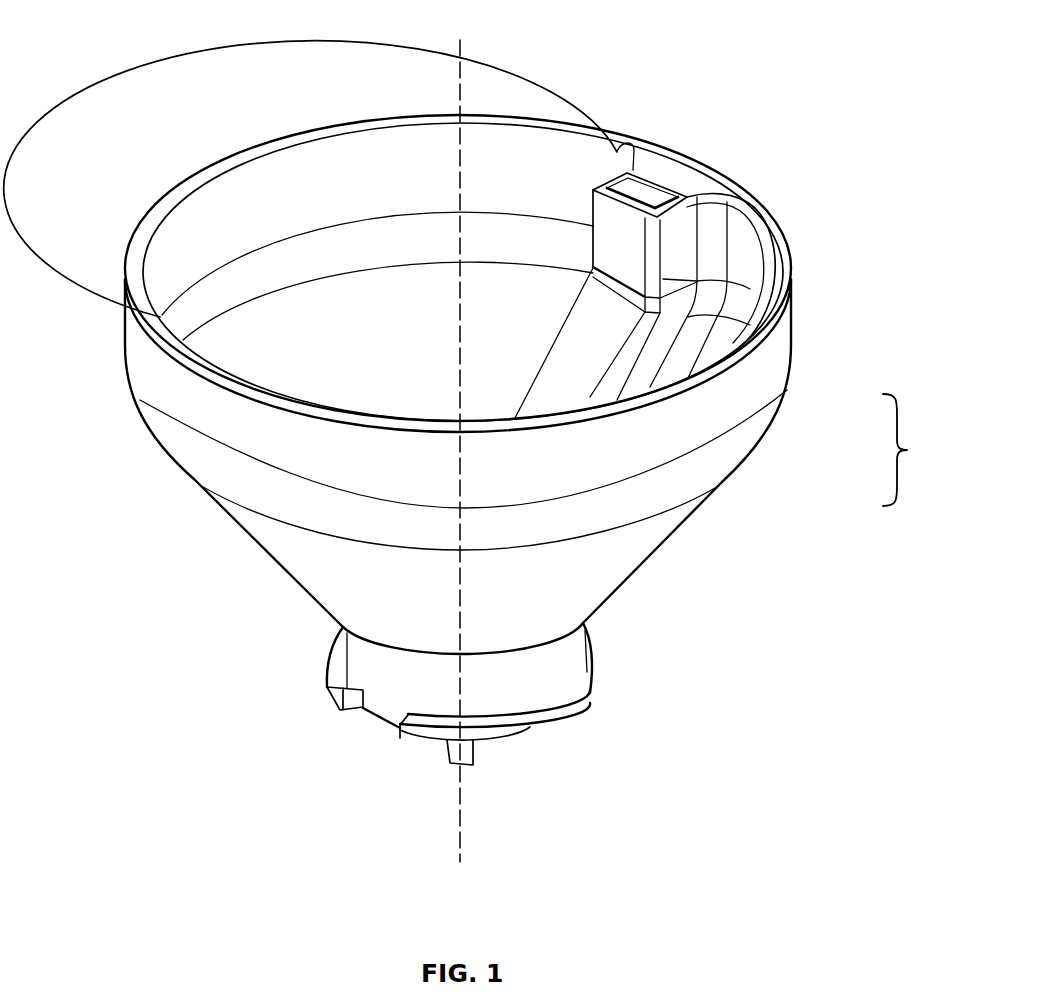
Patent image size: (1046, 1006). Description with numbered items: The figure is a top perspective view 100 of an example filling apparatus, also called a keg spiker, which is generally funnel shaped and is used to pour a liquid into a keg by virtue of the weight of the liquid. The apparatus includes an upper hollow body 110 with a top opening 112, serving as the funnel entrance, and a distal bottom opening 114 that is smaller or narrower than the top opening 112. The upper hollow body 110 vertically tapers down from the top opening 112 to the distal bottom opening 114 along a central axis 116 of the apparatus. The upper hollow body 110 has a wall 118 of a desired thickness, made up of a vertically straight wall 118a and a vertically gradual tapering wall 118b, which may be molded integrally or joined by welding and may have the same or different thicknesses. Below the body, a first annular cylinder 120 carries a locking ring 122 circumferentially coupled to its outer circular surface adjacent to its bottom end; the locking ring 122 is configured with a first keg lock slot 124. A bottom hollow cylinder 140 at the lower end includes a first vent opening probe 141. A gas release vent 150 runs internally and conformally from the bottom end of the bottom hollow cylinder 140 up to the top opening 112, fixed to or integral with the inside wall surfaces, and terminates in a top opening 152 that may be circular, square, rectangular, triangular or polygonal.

The top perspective view 100 is at (142, 48).
The upper hollow body 110 is at (171, 381).
The top opening 112 is at (188, 240).
The distal bottom opening 114 is at (427, 663).
The central axis 116 is at (468, 53).
The wall 118 is at (921, 450).
The vertically straight wall 118a is at (757, 387).
The vertically gradual tapering wall 118b is at (600, 573).
The first annular cylinder 120 is at (533, 671).
The locking ring 122 is at (328, 687).
The first keg lock slot 124 is at (377, 724).
The bottom hollow cylinder 140 is at (499, 748).
The first vent opening probe 141 is at (467, 760).
The gas release vent 150 is at (593, 335).
The top opening of the gas release vent 152 is at (658, 196).